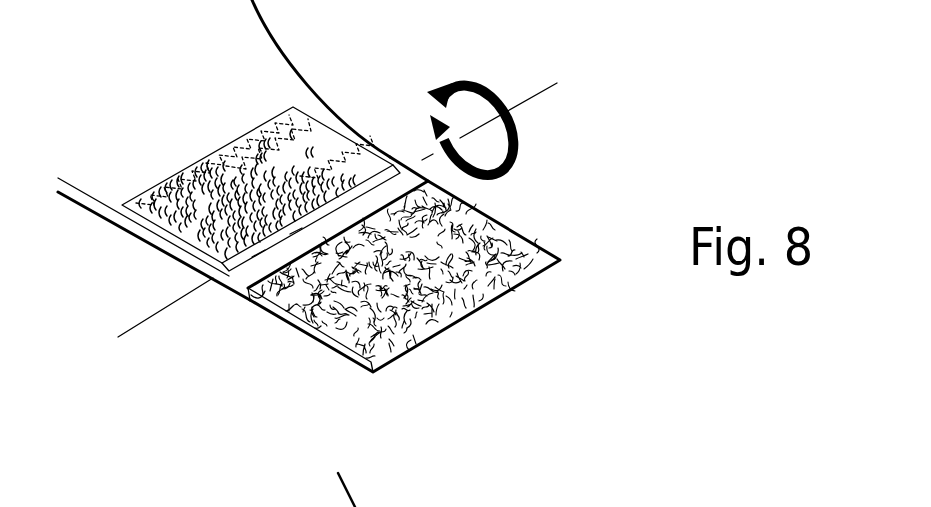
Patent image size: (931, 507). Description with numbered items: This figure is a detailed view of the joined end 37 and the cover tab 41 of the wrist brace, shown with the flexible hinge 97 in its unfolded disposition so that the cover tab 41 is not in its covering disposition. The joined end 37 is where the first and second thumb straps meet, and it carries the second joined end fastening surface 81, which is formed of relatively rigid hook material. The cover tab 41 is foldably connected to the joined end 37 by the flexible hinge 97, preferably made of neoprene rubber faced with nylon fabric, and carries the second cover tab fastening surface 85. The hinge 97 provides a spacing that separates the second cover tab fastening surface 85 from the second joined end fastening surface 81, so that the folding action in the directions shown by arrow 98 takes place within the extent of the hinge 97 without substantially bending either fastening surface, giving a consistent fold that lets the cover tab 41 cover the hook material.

The joined end 37 is at (136, 241).
The second joined end fastening surface 81 is at (308, 152).
The second cover tab fastening surface 85 is at (497, 248).
The cover tab 41 is at (344, 359).
The flexible hinge 97 is at (253, 268).
The arrow 98 is at (473, 72).